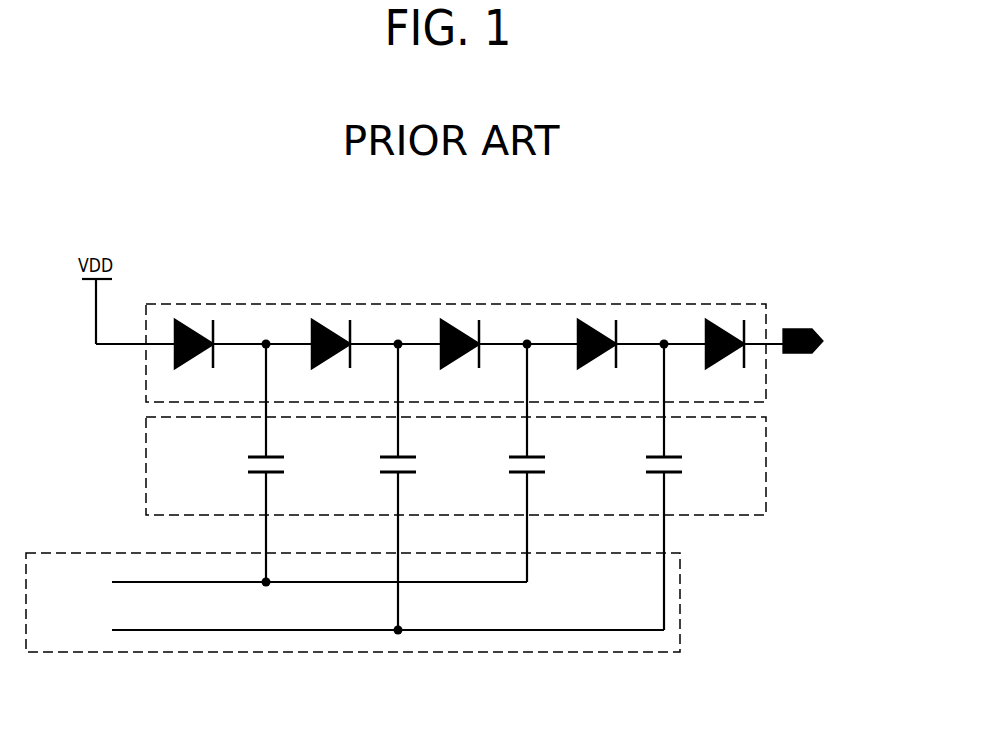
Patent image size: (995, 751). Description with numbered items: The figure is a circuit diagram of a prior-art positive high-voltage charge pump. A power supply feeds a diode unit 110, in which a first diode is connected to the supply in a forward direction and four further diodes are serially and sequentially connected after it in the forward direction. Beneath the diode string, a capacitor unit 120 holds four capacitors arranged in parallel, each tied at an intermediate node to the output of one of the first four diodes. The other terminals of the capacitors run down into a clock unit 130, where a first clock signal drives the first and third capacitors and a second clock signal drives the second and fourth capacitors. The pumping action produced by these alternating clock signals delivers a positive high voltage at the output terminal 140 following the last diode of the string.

The diode unit 110 is at (607, 302).
The capacitor unit 120 is at (766, 465).
The clock unit 130 is at (680, 600).
The output terminal VOUT 140 is at (795, 328).